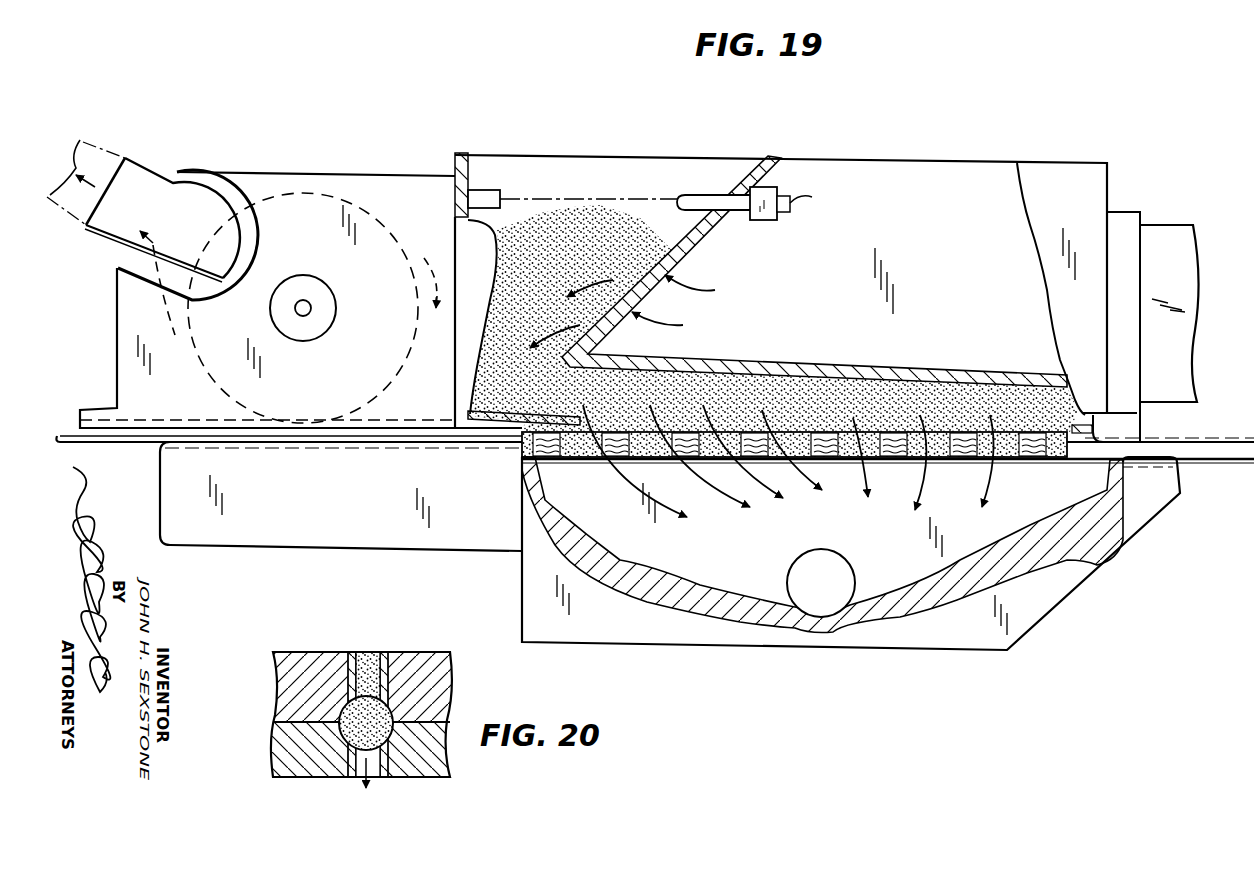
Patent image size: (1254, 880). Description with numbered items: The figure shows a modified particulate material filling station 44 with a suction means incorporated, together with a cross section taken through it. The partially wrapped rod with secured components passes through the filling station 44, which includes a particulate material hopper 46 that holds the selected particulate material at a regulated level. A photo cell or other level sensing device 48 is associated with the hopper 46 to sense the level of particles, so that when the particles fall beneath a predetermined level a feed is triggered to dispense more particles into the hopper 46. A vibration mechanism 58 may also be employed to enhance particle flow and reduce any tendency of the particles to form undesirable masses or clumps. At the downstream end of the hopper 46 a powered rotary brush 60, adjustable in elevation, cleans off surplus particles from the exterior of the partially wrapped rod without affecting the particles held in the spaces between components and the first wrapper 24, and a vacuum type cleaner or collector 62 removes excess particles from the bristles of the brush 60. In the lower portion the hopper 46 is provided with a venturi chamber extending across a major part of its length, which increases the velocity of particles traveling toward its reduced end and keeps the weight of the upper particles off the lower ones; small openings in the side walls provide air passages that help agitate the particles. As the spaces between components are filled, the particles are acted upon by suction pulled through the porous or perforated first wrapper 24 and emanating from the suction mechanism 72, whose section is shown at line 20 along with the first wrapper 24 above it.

In FIG. 19, the particulate material filling station 44 is at (862, 153).
In FIG. 19, the particulate material hopper 46 is at (570, 165).
In FIG. 19, the level sensing device 48 is at (782, 187).
In FIG. 19, the vibration mechanism 58 is at (1168, 240).
In FIG. 19, the powered rotary brush 60 is at (368, 223).
In FIG. 19, the vacuum type cleaner or collector 62 is at (138, 178).
In FIG. 19, the fibrous web 20 is at (996, 390).
In FIG. 19, the first wrapper 24 is at (1225, 467).
In FIG. 20, the first wrapper 24 is at (442, 695).
In FIG. 19, the suction mechanism 72 is at (906, 633).
In FIG. 20, the suction mechanism 72 is at (452, 750).